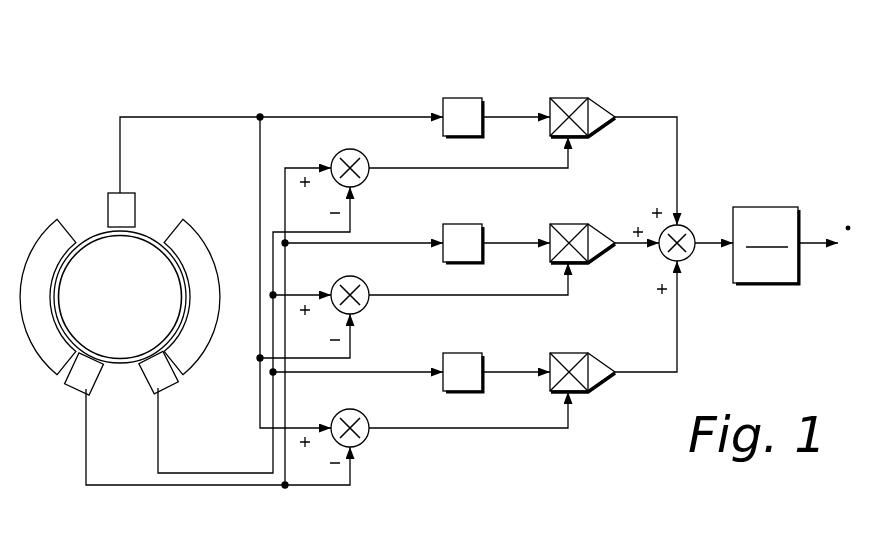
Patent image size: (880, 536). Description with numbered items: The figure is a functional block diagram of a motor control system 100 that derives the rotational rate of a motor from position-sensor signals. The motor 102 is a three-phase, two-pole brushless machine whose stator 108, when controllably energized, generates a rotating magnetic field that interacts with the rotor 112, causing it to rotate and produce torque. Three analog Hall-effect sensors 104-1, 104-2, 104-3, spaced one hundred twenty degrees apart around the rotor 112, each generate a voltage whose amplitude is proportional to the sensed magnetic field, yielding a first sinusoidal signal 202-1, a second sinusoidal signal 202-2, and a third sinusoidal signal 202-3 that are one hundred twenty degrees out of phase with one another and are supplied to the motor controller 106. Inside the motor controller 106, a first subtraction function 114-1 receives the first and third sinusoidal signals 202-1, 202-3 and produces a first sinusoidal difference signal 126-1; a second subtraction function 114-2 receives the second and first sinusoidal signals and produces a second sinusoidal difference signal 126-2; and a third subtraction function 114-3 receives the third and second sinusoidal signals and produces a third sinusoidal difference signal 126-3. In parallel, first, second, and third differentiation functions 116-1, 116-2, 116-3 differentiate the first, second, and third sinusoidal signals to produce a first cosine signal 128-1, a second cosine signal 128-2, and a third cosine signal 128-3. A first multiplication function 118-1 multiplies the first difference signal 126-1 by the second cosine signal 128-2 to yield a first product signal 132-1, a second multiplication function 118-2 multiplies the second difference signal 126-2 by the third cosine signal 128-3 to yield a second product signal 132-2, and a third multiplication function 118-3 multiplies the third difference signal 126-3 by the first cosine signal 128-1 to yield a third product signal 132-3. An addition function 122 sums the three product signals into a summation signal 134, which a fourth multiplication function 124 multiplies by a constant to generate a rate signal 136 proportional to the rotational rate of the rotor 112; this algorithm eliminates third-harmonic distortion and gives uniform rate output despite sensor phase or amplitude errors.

The motor control system 100 is at (473, 70).
The motor 102 is at (88, 182).
The analog Hall-effect sensor 104-1 is at (67, 383).
The analog Hall-effect sensor 104-2 is at (163, 383).
The analog Hall-effect sensor 104-3 is at (135, 195).
The motor controller 106 is at (645, 95).
The stator 108 is at (38, 230).
The rotor 112 is at (148, 227).
The first subtraction function 114-1 is at (338, 412).
The second subtraction function 114-2 is at (338, 152).
The third subtraction function 114-3 is at (338, 279).
The first differentiation function 116-1 is at (452, 224).
The second differentiation function 116-2 is at (452, 353).
The third differentiation function 116-3 is at (452, 97).
The first multiplication function 118-1 is at (572, 341).
The second multiplication function 118-2 is at (572, 85).
The third multiplication function 118-3 is at (572, 211).
The addition function 122 is at (686, 259).
The fourth multiplication function 124 is at (768, 207).
The first sinusoidal difference signal 126-1 is at (400, 417).
The second sinusoidal difference signal 126-2 is at (400, 157).
The third sinusoidal difference signal 126-3 is at (400, 284).
The first cosine signal 128-1 is at (515, 233).
The second cosine signal 128-2 is at (515, 361).
The third cosine signal 128-3 is at (512, 116).
The first product signal 132-1 is at (625, 373).
The second product signal 132-2 is at (625, 118).
The third product signal 132-3 is at (625, 245).
The summation signal 134 is at (708, 242).
The rate signal 136 is at (812, 247).
The first sinusoidal signal 202-1 is at (190, 487).
The second sinusoidal signal 202-2 is at (208, 457).
The third sinusoidal signal 202-3 is at (220, 115).